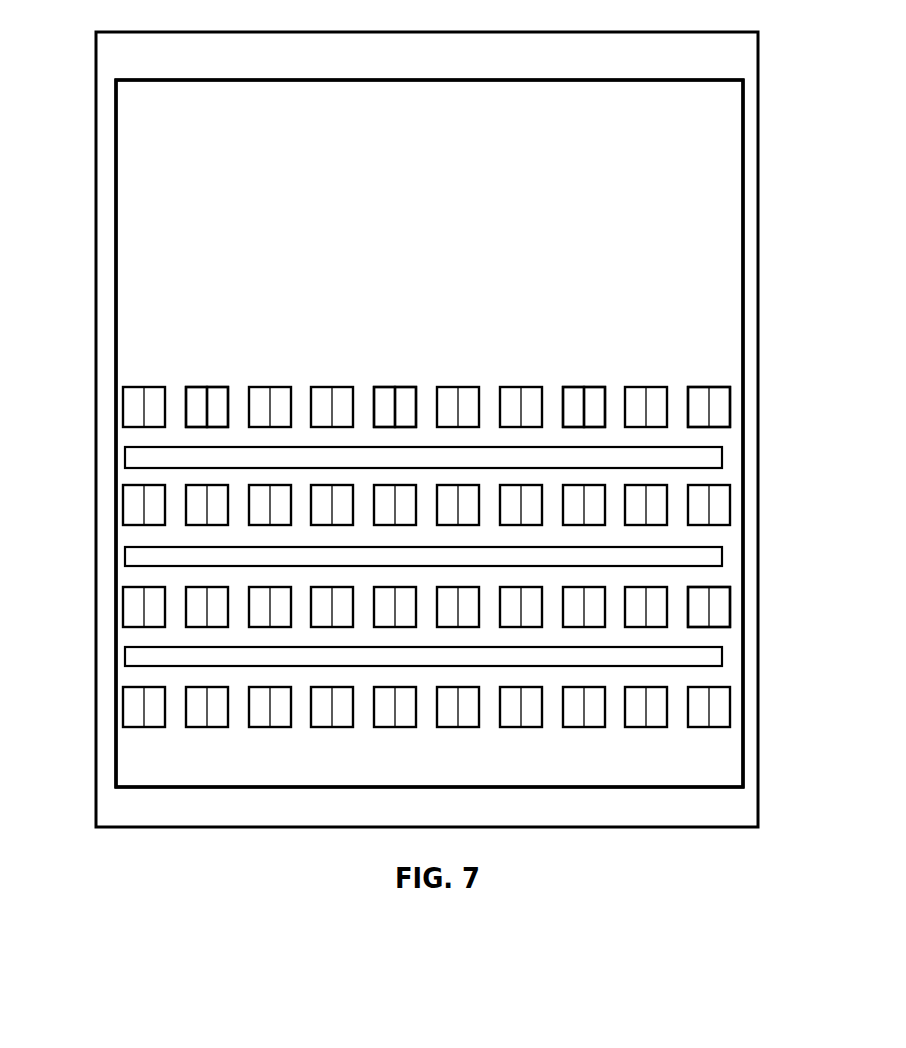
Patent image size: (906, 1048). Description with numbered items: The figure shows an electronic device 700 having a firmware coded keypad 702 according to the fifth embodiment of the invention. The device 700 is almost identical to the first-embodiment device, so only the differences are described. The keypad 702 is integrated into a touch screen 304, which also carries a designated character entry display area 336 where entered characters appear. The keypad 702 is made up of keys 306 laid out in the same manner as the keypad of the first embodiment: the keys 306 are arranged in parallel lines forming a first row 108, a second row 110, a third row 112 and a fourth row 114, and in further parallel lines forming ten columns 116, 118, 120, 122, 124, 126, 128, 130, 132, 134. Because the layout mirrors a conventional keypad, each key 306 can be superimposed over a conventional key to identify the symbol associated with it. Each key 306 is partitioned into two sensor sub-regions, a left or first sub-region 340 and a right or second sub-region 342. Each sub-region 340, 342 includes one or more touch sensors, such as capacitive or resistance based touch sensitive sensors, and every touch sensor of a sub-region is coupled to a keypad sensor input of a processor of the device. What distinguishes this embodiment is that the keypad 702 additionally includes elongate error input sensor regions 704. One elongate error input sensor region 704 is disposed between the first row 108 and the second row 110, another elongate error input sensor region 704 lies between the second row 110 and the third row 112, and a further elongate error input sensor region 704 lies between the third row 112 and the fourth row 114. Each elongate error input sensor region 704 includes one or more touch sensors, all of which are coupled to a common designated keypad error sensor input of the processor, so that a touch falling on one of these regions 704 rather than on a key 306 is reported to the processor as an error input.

The electronic device 700 is at (172, 908).
The touch screen 304 is at (457, 255).
The character entry display area 336 is at (223, 163).
The firmware coded keypad 702 is at (706, 742).
The elongate error input sensor region 704 is at (130, 453).
The row 108 is at (119, 405).
The row 110 is at (119, 505).
The row 112 is at (119, 599).
The row 114 is at (119, 708).
The column 116 is at (144, 385).
The column 118 is at (206, 385).
The column 120 is at (270, 385).
The column 122 is at (332, 385).
The column 124 is at (395, 385).
The column 126 is at (458, 385).
The column 128 is at (519, 385).
The column 130 is at (582, 385).
The column 132 is at (647, 385).
The column 134 is at (708, 385).
The first sub-region 340 is at (191, 387).
The second sub-region 342 is at (215, 387).
The key 306 is at (731, 412).